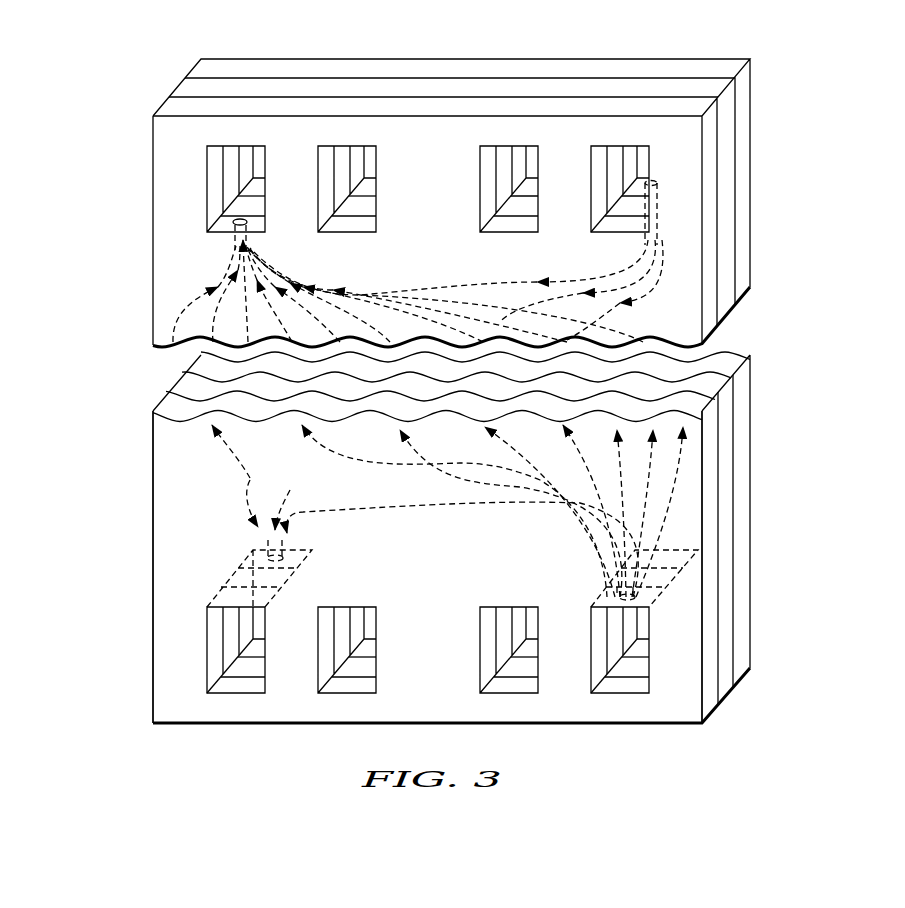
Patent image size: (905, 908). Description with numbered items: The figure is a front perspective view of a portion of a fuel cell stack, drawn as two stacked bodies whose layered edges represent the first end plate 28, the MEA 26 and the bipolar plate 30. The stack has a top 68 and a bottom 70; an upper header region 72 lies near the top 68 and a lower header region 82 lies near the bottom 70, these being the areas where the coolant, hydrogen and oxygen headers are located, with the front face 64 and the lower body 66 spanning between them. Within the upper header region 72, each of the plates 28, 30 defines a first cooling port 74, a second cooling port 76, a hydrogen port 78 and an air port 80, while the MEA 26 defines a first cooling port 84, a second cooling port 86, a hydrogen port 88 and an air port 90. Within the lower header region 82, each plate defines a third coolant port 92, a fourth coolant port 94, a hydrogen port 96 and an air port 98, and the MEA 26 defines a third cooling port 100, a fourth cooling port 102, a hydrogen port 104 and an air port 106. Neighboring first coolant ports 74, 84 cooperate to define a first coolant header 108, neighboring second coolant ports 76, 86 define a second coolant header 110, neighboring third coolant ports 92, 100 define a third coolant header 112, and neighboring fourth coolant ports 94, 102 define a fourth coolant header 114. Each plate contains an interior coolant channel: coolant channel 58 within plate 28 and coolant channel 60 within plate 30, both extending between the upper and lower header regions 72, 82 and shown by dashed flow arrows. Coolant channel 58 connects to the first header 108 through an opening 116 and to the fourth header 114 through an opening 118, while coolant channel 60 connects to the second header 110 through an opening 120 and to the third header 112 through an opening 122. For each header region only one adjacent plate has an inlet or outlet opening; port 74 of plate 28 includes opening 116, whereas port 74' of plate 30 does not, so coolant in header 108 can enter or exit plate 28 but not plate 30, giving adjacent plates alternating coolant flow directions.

The MEA 26 is at (725, 660).
The first end plate 28 is at (712, 695).
The bipolar plate 30 is at (742, 628).
The coolant channel 58 is at (328, 275).
The coolant channel 60 is at (657, 253).
The front surface of upper body 64 is at (453, 261).
The lower body 66 is at (118, 405).
The top 68 is at (585, 90).
The bottom 70 is at (260, 725).
The upper header region 72 is at (118, 212).
The first cooling port 74 is at (190, 182).
The first cooling port of plate 30 74' is at (283, 149).
The second cooling port 76 is at (602, 185).
The hydrogen port 78 is at (348, 223).
The air port 80 is at (490, 146).
The lower header region 82 is at (118, 632).
The first cooling port 84 is at (253, 205).
The second cooling port 86 is at (615, 158).
The hydrogen port 88 is at (363, 205).
The air port 90 is at (520, 204).
The third coolant port 92 is at (237, 686).
The fourth coolant port 94 is at (618, 686).
The hydrogen port 96 is at (348, 686).
The air port 98 is at (515, 686).
The third cooling port 100 is at (247, 668).
The fourth cooling port 102 is at (627, 668).
The hydrogen port 104 is at (358, 668).
The air port 106 is at (520, 668).
The first coolant header 108 is at (233, 211).
The second coolant header 110 is at (625, 215).
The third coolant header 112 is at (228, 652).
The fourth coolant header 114 is at (612, 647).
The opening 116 is at (248, 225).
The opening 118 is at (605, 597).
The opening 120 is at (653, 185).
The opening 122 is at (250, 555).